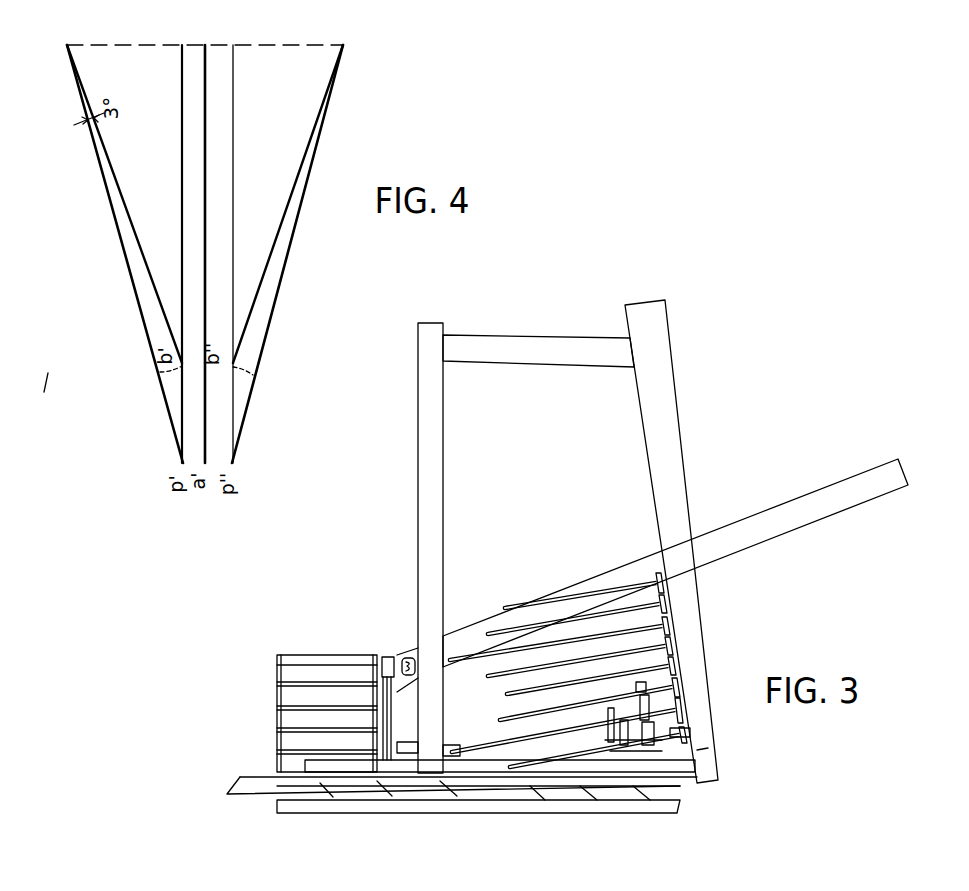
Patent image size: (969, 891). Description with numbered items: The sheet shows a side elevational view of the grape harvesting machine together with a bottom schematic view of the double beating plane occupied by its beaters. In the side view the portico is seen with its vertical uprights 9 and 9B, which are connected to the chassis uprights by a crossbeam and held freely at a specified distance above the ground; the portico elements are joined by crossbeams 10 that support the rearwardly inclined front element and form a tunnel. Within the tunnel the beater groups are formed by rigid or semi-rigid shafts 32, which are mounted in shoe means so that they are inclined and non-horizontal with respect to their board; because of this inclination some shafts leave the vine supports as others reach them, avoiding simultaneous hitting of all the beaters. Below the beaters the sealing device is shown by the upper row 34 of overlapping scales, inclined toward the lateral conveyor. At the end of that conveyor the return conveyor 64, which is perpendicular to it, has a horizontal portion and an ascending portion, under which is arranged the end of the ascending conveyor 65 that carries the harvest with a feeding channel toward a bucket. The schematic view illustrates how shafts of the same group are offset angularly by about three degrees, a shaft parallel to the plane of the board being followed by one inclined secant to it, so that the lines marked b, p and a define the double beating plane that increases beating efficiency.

In FIG. 3, the vertical upright 9 is at (667, 404).
In FIG. 3, the vertical upright 9B is at (428, 460).
In FIG. 3, the crossbeam 10 is at (512, 347).
In FIG. 3, the shafts 32 is at (537, 600).
In FIG. 3, the row of scales 34 is at (602, 793).
In FIG. 3, the return conveyor 64 is at (292, 708).
In FIG. 3, the ascending conveyor 65 is at (779, 515).
In FIG. 4, the line b is at (195, 243).
In FIG. 4, the line p is at (197, 243).
In FIG. 4, the line a is at (199, 243).